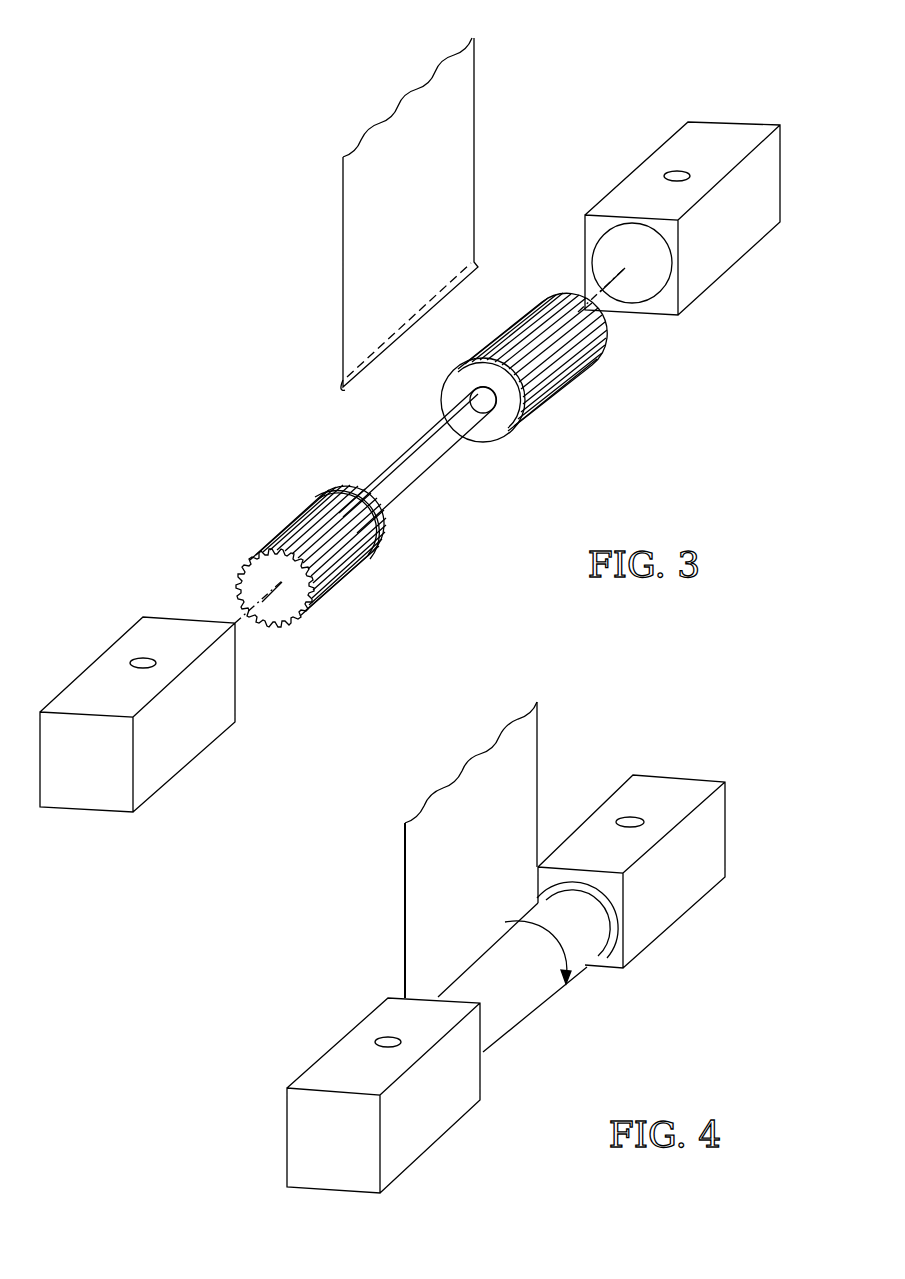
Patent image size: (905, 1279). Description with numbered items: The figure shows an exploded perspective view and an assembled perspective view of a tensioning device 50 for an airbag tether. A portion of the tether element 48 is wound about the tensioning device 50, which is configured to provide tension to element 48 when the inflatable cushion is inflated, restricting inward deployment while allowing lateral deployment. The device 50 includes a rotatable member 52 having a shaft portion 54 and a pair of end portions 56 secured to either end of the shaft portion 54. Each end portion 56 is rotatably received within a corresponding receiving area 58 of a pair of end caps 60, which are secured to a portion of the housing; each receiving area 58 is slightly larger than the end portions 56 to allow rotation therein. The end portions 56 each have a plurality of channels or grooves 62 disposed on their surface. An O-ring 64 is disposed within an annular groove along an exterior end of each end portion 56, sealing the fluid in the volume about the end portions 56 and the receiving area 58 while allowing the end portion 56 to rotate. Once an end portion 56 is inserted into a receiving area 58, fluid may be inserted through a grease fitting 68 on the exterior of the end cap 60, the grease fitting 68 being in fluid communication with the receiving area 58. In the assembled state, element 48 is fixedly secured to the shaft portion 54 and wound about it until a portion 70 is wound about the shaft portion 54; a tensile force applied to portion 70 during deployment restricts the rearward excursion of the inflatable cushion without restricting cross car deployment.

In FIG. 3, the element 48 is at (463, 185).
In FIG. 4, the element 48 is at (527, 852).
In FIG. 3, the tensioning device 50 is at (577, 124).
In FIG. 3, the rotatable member 52 is at (421, 455).
In FIG. 3, the shaft portion 54 is at (410, 478).
In FIG. 3, the end portion 56 is at (421, 455).
In FIG. 3, the receiving area 58 is at (640, 290).
In FIG. 3, the end cap 60 is at (742, 237).
In FIG. 4, the end cap 60 is at (425, 1130).
In FIG. 3, the channels or grooves 62 is at (540, 313).
In FIG. 3, the O-ring 64 is at (530, 408).
In FIG. 3, the grease fitting 68 is at (670, 176).
In FIG. 4, the grease fitting 68 is at (628, 820).
In FIG. 4, the portion 70 is at (527, 995).